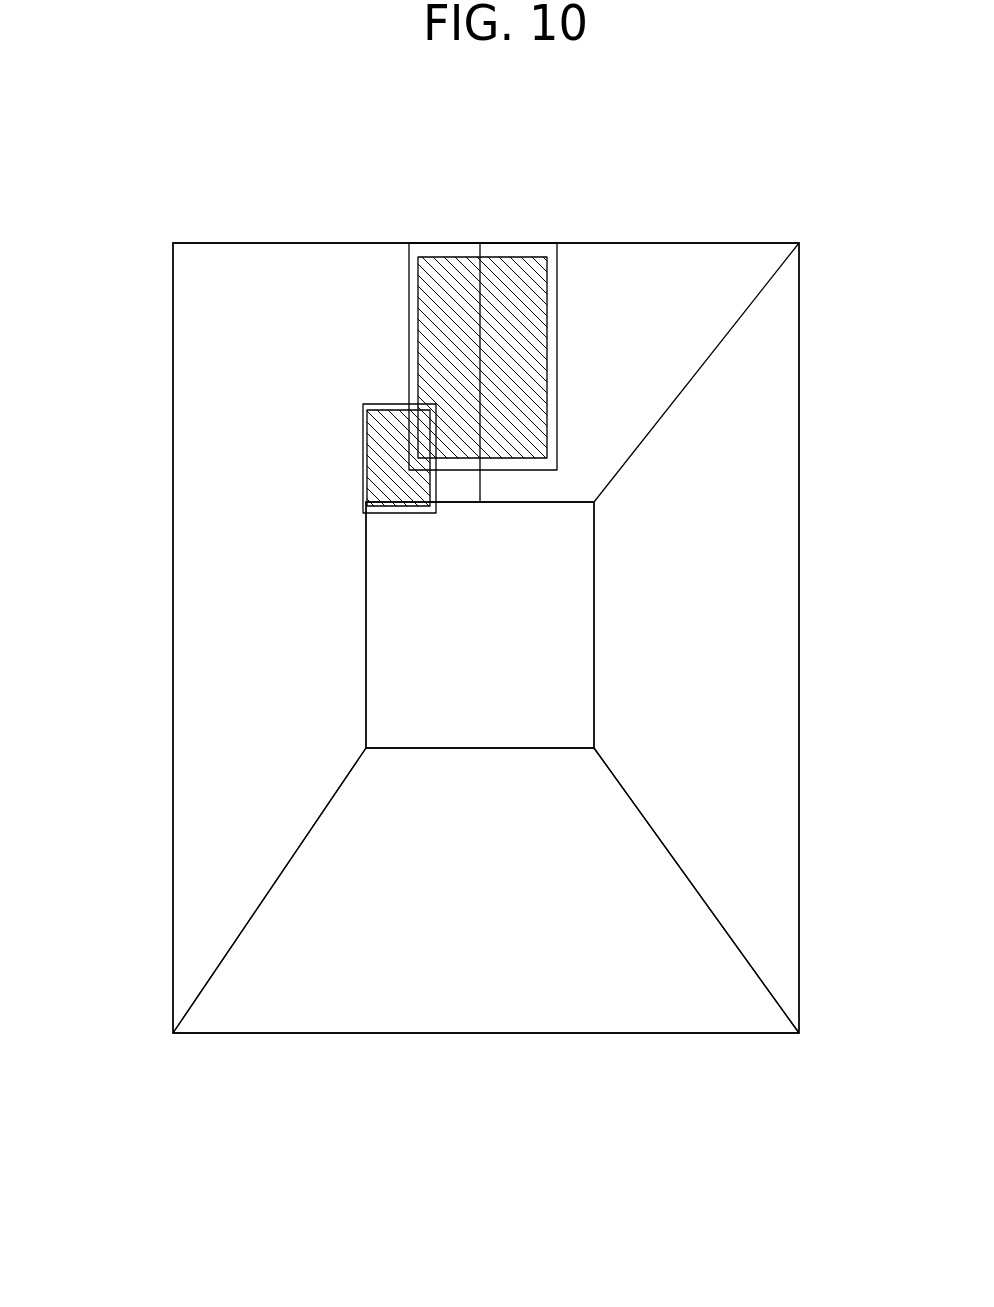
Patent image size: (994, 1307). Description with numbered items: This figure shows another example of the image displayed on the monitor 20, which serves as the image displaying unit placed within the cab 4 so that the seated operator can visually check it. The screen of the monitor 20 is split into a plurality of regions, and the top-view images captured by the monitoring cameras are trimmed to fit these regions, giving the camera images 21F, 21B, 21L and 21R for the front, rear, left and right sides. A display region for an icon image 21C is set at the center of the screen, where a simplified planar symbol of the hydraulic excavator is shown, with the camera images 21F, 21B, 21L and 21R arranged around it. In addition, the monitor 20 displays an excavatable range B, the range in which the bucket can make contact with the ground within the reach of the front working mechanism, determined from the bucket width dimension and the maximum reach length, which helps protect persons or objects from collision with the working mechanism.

The monitor 20 is at (799, 441).
The camera image 21F is at (676, 268).
The camera image 21L is at (215, 643).
The camera image 21R is at (763, 623).
The camera image 21B is at (447, 1012).
The icon image 21C is at (528, 728).
The excavatable range B is at (507, 278).
The cab 4 is at (383, 460).